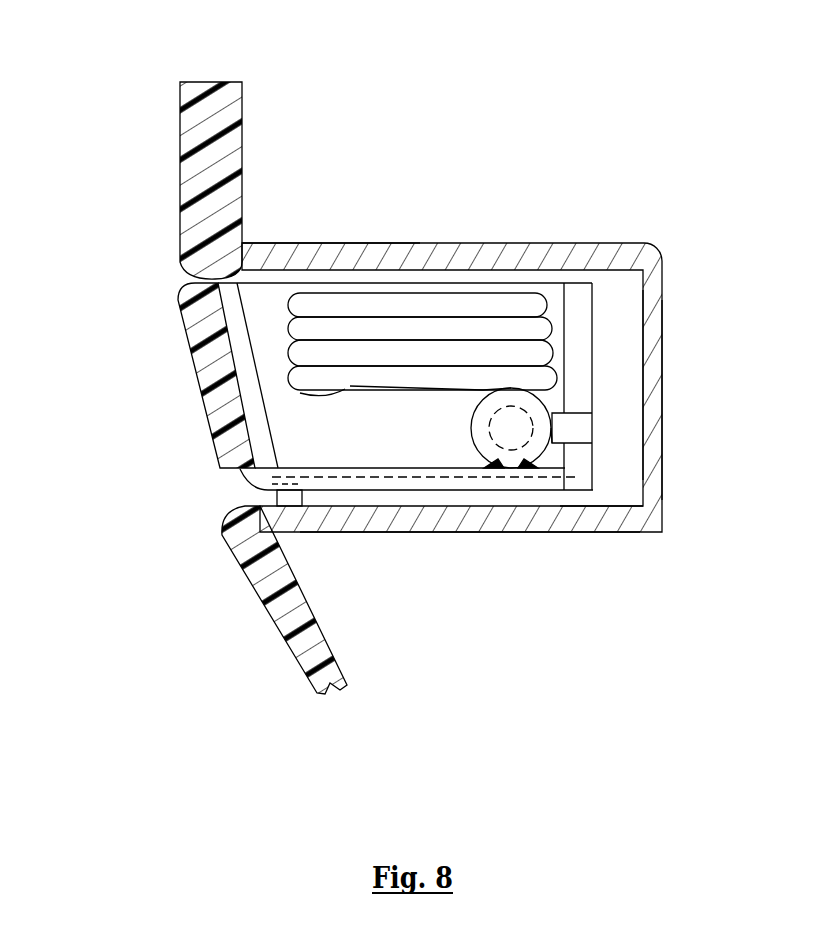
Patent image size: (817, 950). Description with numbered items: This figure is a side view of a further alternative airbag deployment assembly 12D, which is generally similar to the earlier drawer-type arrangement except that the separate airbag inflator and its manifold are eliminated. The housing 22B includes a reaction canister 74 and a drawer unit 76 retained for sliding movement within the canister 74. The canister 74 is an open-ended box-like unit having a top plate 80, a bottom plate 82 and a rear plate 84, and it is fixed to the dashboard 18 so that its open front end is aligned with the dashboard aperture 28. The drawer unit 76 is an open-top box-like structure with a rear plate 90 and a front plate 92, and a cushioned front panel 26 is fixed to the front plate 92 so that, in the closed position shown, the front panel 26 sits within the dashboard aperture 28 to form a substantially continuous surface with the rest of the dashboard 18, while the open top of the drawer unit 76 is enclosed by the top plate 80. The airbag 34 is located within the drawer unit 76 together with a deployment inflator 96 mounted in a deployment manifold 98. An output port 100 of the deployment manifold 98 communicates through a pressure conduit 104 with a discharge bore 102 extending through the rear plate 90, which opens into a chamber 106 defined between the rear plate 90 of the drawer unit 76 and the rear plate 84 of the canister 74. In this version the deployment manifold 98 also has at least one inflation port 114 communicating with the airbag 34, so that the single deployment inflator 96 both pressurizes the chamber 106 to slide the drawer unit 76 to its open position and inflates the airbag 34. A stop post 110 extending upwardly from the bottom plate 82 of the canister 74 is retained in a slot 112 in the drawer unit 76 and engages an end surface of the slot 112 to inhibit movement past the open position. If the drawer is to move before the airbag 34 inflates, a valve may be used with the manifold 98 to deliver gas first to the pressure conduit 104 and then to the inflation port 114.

The airbag deployment assembly 12D is at (518, 375).
The dashboard 18 is at (190, 112).
The cushioned front panel 26 is at (190, 368).
The dashboard aperture 28 is at (223, 520).
The airbag 34 is at (502, 310).
The reaction canister 74 is at (572, 240).
The drawer unit 76 is at (597, 320).
The top plate 80 is at (277, 245).
The bottom plate 82 is at (553, 515).
The rear plate 84 is at (658, 382).
The rear plate 90 is at (583, 358).
The front plate 92 is at (237, 312).
The deployment inflator 96 is at (511, 428).
The deployment manifold 98 is at (473, 423).
The output port 100 is at (553, 417).
The discharge bore 102 is at (575, 433).
The pressure conduit 104 is at (557, 419).
The chamber 106 is at (620, 488).
The stop post 110 is at (293, 497).
The slot 112 is at (417, 478).
The inflation port 114 is at (482, 395).
The housing 22B is at (598, 497).